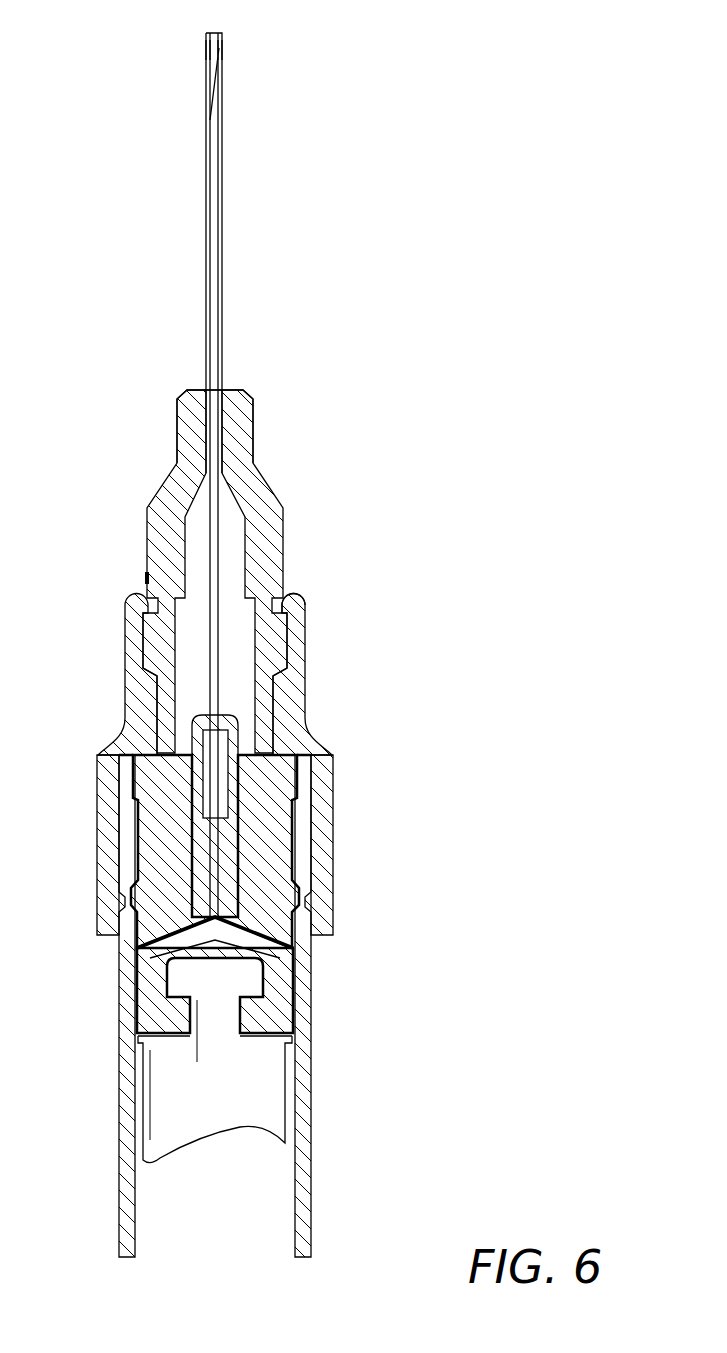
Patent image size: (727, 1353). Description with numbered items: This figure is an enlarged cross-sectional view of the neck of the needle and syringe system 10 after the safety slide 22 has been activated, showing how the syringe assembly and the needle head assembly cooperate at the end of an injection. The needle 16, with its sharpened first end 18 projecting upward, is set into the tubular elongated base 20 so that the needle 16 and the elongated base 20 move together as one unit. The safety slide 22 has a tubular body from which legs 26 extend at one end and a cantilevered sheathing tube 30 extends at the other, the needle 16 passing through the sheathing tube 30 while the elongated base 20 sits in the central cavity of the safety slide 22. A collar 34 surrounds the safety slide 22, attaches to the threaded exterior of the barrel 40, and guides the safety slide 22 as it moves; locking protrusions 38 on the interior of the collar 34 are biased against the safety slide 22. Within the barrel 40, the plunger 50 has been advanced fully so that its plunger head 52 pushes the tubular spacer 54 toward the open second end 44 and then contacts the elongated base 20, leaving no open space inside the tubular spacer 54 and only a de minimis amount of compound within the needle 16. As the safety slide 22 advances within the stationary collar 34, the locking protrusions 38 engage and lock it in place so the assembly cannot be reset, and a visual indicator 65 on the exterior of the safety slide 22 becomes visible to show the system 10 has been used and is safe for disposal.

The needle and syringe system 10 is at (386, 237).
The needle 16 is at (213, 547).
The sharpened first end 18 is at (208, 77).
The elongated base 20 is at (205, 890).
The safety slide 22 is at (155, 488).
The legs 26 is at (160, 733).
The sheathing tube 30 is at (205, 45).
The collar 34 is at (335, 848).
The locking protrusions 38 is at (281, 602).
The barrel 40 is at (305, 1195).
The open second end 44 is at (281, 727).
The plunger 50 is at (265, 1072).
The plunger head 52 is at (275, 990).
The tubular spacer 54 is at (162, 777).
The visual indicator 65 is at (145, 578).